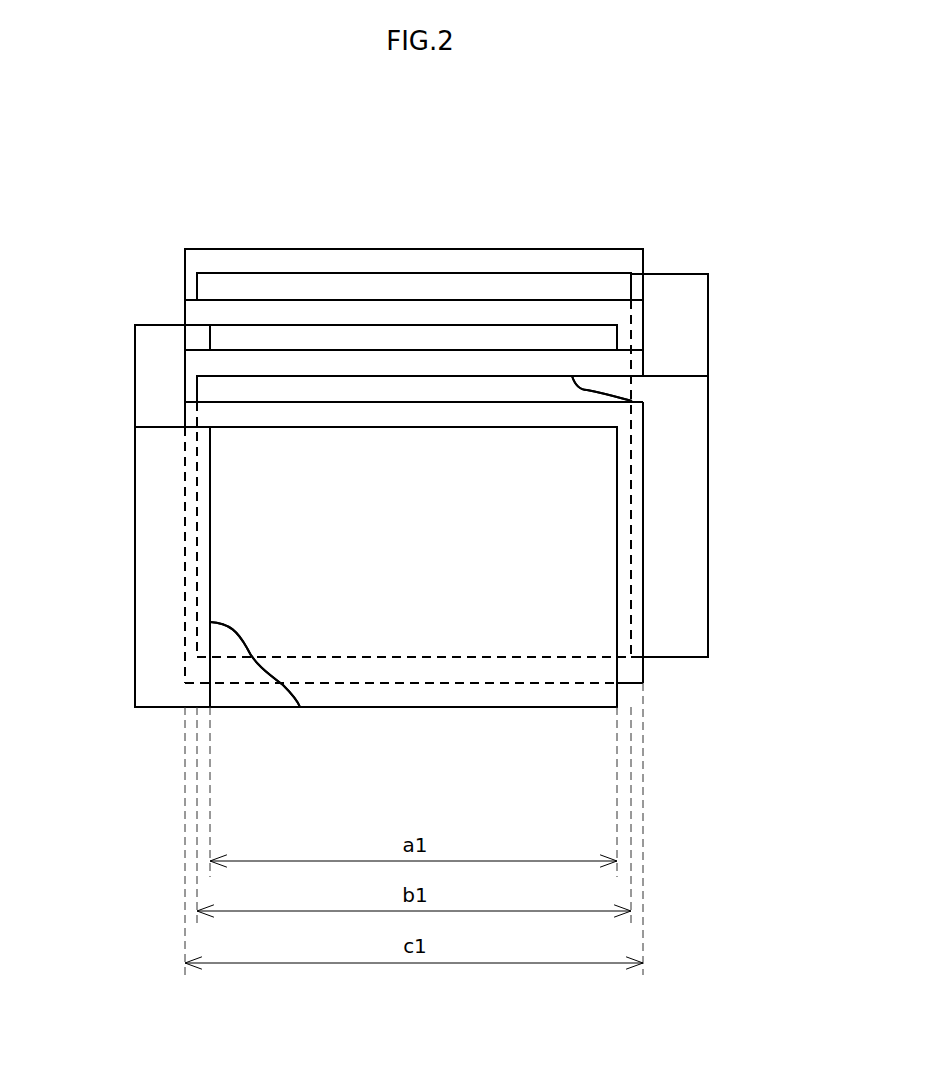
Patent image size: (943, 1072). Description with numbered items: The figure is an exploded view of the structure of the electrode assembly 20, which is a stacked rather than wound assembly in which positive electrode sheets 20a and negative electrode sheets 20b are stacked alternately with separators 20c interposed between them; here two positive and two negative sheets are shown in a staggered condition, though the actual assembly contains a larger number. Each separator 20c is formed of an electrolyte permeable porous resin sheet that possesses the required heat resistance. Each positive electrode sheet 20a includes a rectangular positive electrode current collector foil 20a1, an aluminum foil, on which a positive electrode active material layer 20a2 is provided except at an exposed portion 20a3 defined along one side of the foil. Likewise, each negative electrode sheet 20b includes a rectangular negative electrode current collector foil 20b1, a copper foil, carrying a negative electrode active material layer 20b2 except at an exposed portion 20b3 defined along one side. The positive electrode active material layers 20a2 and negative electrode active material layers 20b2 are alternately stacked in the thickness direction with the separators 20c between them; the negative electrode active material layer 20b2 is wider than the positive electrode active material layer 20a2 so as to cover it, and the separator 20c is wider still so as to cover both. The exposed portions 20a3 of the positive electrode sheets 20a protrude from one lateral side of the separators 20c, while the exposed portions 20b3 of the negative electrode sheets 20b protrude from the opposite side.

The electrode assembly 20 is at (145, 168).
The positive electrode sheet 20a is at (527, 323).
The positive electrode current collector foil 20a1 is at (257, 698).
The positive electrode active material layer 20a2 is at (305, 335).
The exposed portion 20a3 is at (143, 375).
The negative electrode sheet 20b is at (273, 373).
The negative electrode current collector foil 20b1 is at (615, 387).
The negative electrode active material layer 20b2 is at (388, 282).
The exposed portion 20b3 is at (700, 357).
The separator 20c is at (603, 249).